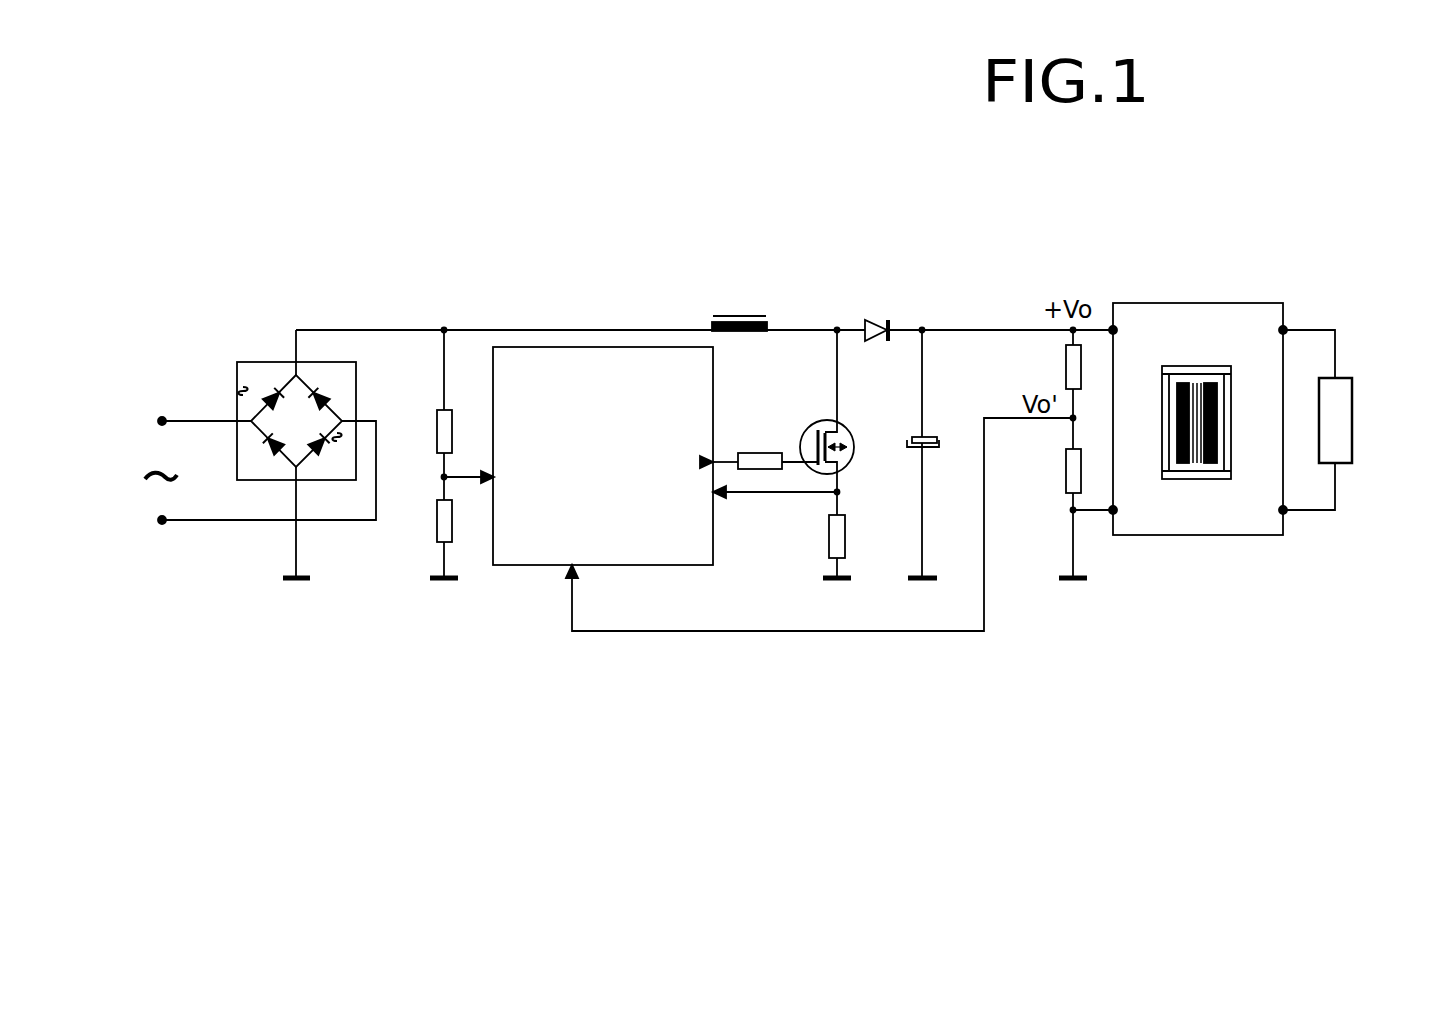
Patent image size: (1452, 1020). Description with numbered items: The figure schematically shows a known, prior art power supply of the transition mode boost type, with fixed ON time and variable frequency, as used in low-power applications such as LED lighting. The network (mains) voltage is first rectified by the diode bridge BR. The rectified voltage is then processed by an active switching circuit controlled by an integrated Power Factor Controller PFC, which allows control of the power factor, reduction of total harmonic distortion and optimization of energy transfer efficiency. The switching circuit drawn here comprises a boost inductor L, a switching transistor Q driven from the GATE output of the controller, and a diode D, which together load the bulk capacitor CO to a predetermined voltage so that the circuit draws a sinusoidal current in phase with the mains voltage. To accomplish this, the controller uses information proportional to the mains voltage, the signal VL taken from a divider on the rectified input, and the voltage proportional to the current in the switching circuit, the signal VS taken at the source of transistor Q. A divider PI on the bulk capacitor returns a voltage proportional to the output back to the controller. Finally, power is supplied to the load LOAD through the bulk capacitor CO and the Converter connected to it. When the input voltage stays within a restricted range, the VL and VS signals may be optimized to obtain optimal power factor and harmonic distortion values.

The diode bridge BR is at (260, 454).
The mains voltage information signal VL is at (450, 454).
The Power Factor Controller PFC is at (783, 489).
The gate drive output GATE is at (718, 461).
The boost inductor L is at (739, 308).
The boost diode D is at (878, 313).
The switching transistor Q is at (839, 411).
The switching current voltage signal VS is at (796, 527).
The bulk capacitor CO is at (937, 454).
The output voltage sense divider PI is at (1068, 425).
The converter Converter is at (1198, 419).
The load LOAD is at (1359, 420).